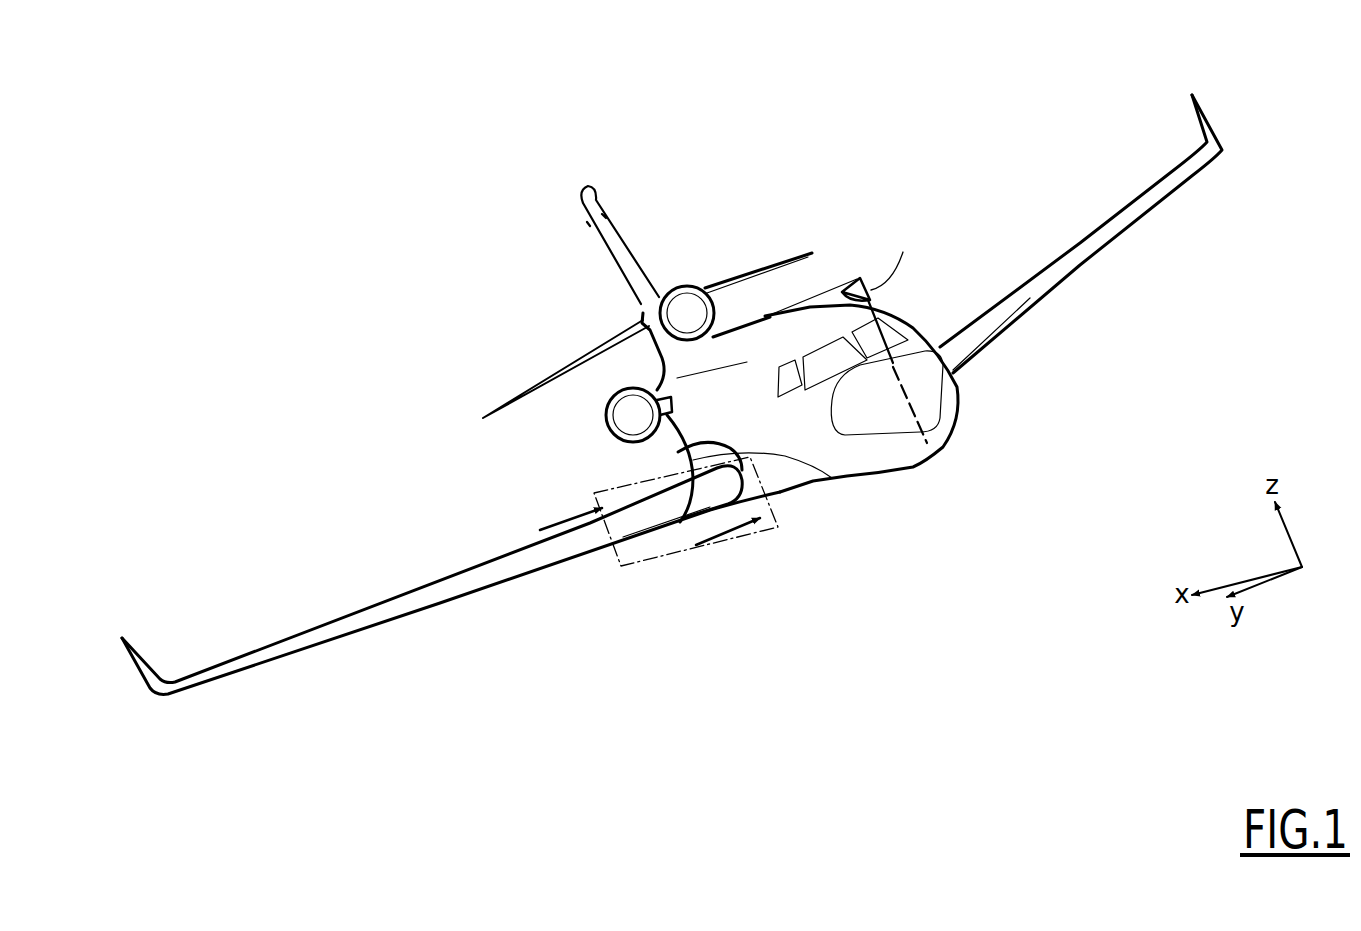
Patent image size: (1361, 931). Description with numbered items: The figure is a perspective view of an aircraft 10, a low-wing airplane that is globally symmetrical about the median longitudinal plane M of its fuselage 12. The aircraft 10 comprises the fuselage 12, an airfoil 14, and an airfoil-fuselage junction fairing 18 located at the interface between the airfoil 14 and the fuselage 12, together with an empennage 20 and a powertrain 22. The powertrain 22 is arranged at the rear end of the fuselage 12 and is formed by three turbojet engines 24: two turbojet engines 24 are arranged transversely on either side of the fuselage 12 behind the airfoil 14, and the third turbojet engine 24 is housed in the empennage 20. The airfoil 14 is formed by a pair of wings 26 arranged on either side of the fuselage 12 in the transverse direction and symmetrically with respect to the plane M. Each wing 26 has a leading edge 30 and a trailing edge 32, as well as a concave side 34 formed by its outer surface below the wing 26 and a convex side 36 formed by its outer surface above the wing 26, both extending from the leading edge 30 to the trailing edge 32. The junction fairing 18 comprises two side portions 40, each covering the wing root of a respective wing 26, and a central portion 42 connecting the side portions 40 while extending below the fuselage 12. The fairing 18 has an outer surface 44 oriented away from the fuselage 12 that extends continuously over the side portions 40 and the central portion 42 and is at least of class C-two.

The aircraft 10 is at (672, 369).
The fuselage 12 is at (810, 332).
The airfoil 14 is at (1053, 272).
The airfoil-fuselage junction fairing 18 is at (779, 474).
The empennage 20 is at (628, 248).
The powertrain 22 is at (623, 387).
The turbojet engine 24 is at (692, 288).
The wing 26 is at (480, 588).
The leading edge 30 is at (553, 550).
The trailing edge 32 is at (413, 598).
The concave side 34 is at (677, 567).
The convex side 36 is at (490, 573).
The side portion 40 is at (775, 503).
The central portion 42 is at (812, 482).
The outer surface 44 is at (680, 451).